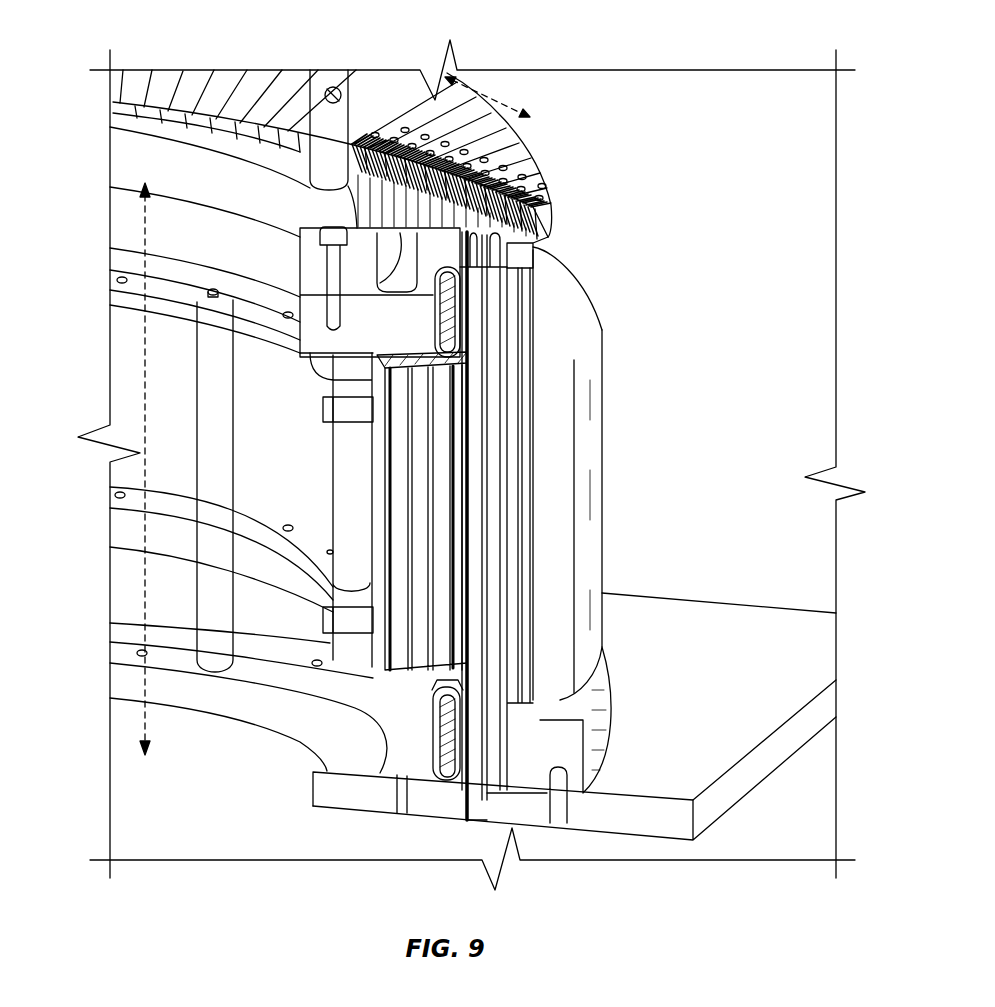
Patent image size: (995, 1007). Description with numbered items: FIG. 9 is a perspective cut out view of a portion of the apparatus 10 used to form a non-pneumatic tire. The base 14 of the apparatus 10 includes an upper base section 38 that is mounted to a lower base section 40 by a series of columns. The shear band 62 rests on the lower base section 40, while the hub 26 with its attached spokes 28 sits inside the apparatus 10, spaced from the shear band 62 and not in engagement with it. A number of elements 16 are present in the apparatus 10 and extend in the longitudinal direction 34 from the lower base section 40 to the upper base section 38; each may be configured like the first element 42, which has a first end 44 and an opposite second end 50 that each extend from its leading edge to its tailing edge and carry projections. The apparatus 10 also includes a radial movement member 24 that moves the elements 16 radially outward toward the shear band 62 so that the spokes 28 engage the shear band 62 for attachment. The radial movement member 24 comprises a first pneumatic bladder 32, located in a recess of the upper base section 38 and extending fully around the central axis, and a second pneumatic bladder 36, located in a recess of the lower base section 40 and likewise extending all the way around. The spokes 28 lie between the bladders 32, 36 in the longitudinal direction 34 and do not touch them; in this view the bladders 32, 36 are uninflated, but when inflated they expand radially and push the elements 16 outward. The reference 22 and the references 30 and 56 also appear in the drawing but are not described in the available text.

The apparatus 10 is at (733, 48).
The base 14 is at (733, 610).
The element 16 is at (502, 272).
The axial direction 22 is at (483, 95).
The radial movement member 24 is at (447, 772).
The hub 26 is at (400, 640).
The spokes 28 is at (410, 640).
The support rod 30 is at (522, 493).
The first pneumatic bladder 32 is at (463, 300).
The longitudinal direction 34 is at (137, 390).
The second pneumatic bladder 36 is at (463, 742).
The upper base section 38 is at (433, 253).
The lower base section 40 is at (600, 740).
The first element 42 is at (500, 347).
The first end 44 is at (547, 230).
The second end 50 is at (497, 805).
The lamination ring 56 is at (517, 157).
The shear band 62 is at (590, 532).